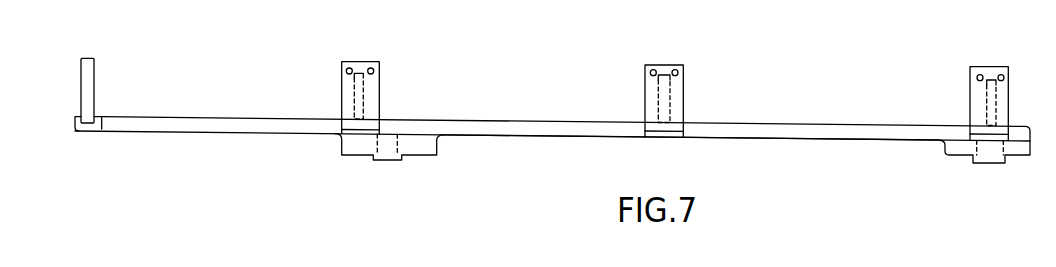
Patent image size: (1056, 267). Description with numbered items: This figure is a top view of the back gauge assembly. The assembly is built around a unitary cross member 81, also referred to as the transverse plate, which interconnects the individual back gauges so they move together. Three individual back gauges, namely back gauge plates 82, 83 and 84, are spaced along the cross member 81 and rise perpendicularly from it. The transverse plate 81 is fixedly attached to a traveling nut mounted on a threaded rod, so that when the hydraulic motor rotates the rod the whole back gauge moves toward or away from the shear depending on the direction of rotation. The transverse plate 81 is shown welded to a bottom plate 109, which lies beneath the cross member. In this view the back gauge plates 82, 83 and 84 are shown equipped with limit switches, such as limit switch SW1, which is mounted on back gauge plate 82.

The unitary cross member 81 is at (500, 121).
The back gauge 82 is at (367, 62).
The back gauge 83 is at (675, 65).
The back gauge 84 is at (988, 67).
The limit switch SW1 is at (367, 98).
The bottom plate 109 is at (416, 146).